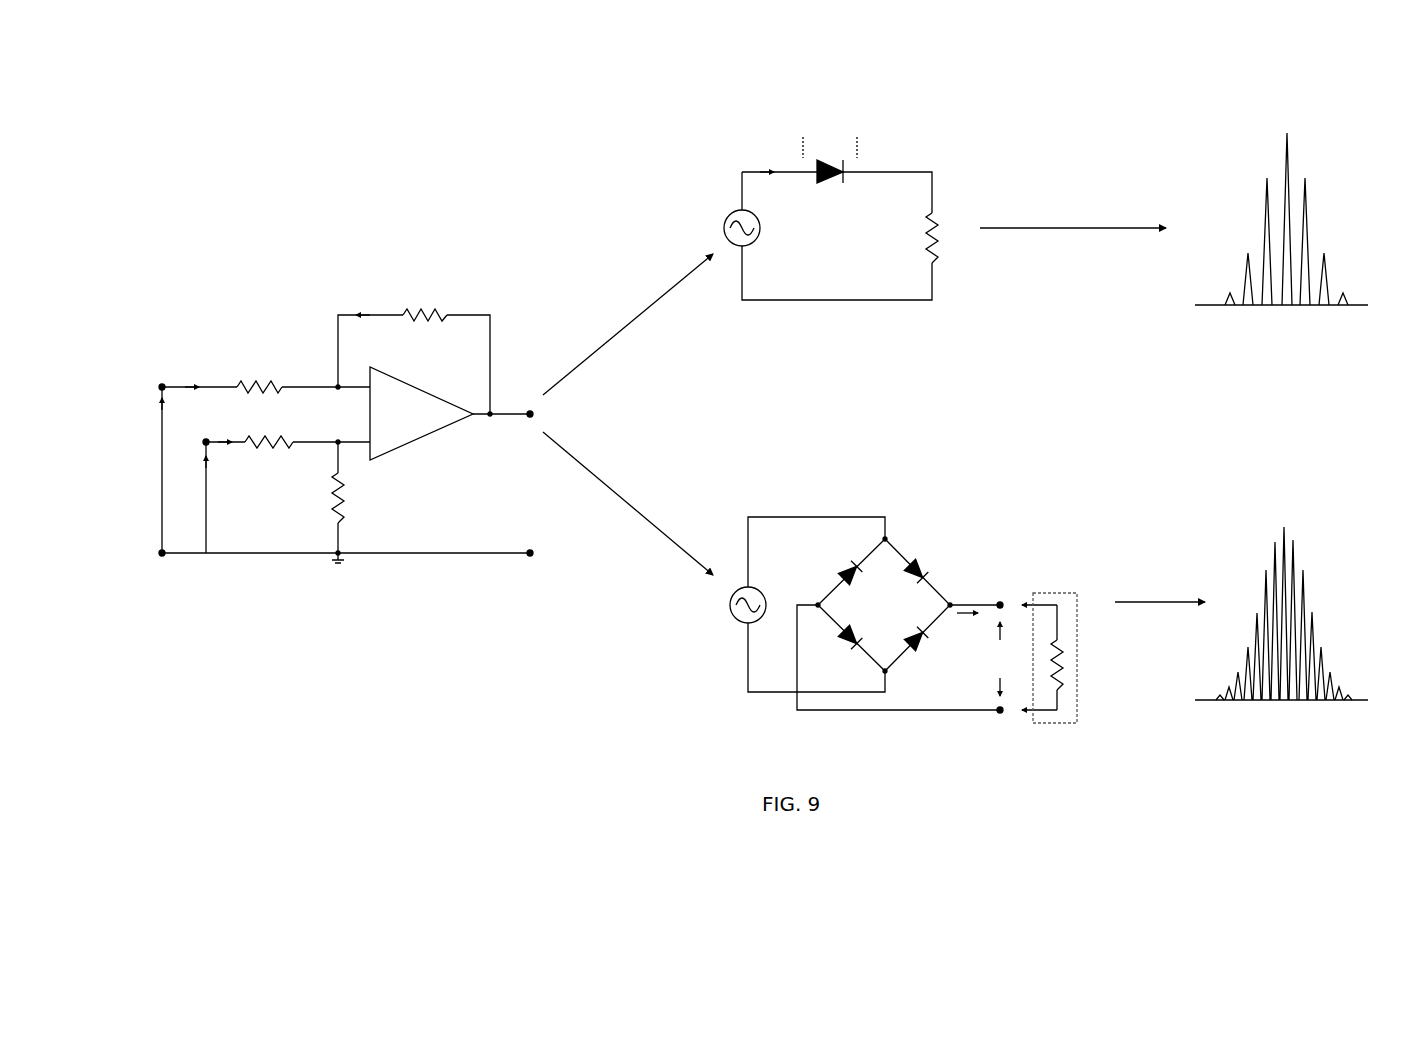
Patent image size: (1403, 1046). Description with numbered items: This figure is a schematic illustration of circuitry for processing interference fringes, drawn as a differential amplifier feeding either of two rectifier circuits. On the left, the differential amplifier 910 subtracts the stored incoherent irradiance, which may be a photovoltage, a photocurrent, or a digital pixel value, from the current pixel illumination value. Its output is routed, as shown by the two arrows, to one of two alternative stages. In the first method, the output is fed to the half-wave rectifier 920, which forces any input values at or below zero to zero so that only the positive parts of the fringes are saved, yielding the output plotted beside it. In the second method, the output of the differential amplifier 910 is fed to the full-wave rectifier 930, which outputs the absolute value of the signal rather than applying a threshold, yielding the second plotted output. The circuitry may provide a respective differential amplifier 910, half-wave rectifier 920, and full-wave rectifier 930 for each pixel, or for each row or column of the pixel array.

The differential amplifier 910 is at (256, 322).
The half-wave rectifier 920 is at (713, 165).
The full-wave rectifier 930 is at (972, 518).